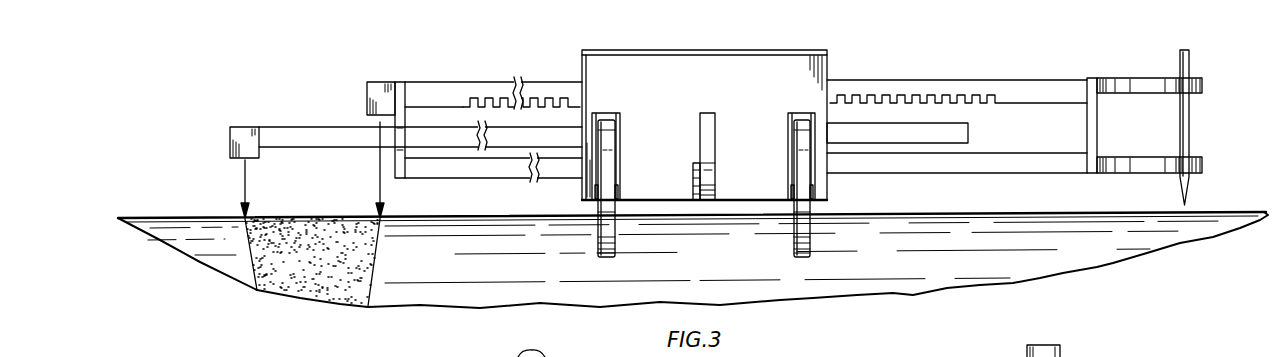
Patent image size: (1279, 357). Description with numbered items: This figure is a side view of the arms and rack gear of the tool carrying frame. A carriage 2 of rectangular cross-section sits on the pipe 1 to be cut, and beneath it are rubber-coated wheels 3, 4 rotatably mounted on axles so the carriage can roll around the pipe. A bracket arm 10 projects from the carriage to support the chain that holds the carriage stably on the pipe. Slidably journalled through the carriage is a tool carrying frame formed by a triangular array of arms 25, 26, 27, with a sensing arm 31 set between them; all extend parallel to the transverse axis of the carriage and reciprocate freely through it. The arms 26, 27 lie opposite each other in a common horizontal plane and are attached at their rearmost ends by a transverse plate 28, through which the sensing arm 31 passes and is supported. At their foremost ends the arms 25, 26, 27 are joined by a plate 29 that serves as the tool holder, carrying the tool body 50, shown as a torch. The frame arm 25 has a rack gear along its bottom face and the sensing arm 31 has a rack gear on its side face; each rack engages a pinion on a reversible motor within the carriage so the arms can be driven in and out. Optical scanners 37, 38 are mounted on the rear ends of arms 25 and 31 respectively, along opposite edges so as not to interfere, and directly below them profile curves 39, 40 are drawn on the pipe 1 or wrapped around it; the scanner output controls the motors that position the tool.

The pipe 1 is at (1062, 212).
The carriage 2 is at (808, 50).
The wheel 3 is at (812, 250).
The wheel 4 is at (617, 250).
The bracket arm 10 is at (715, 133).
The frame arm 25 is at (478, 82).
The arm 26 is at (460, 171).
The arm 27 is at (418, 170).
The transverse plate 28 is at (400, 82).
The plate 29 is at (1095, 80).
The sensing arm 31 is at (289, 125).
The optical scanner 37 is at (238, 134).
The optical scanner 38 is at (367, 95).
The profile curve 39 is at (245, 250).
The profile curve 40 is at (375, 262).
The body 50 is at (1190, 127).